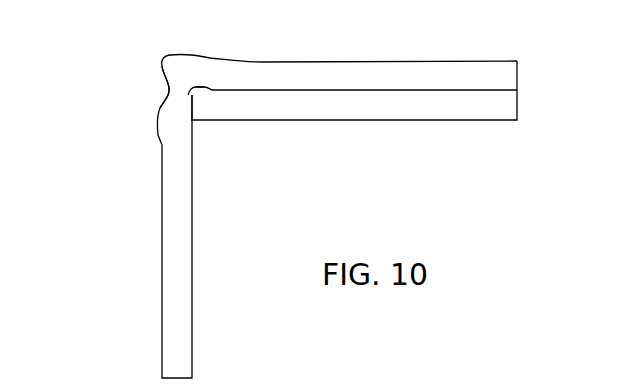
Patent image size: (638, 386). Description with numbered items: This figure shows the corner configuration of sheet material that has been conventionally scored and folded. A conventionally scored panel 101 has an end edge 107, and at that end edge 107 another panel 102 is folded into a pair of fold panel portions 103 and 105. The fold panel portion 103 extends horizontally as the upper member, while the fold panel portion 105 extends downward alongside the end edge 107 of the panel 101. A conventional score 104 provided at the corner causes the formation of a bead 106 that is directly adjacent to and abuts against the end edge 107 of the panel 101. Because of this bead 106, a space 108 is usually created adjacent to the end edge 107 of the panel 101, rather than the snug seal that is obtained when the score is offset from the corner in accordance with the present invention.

The conventionally scored panel 101 is at (413, 120).
The panel 102 is at (471, 61).
The fold panel portion 103 is at (367, 75).
The conventional score 104 is at (168, 86).
The fold panel portion 105 is at (162, 272).
The bead 106 is at (190, 110).
The end edge 107 is at (166, 101).
The space 108 is at (198, 88).